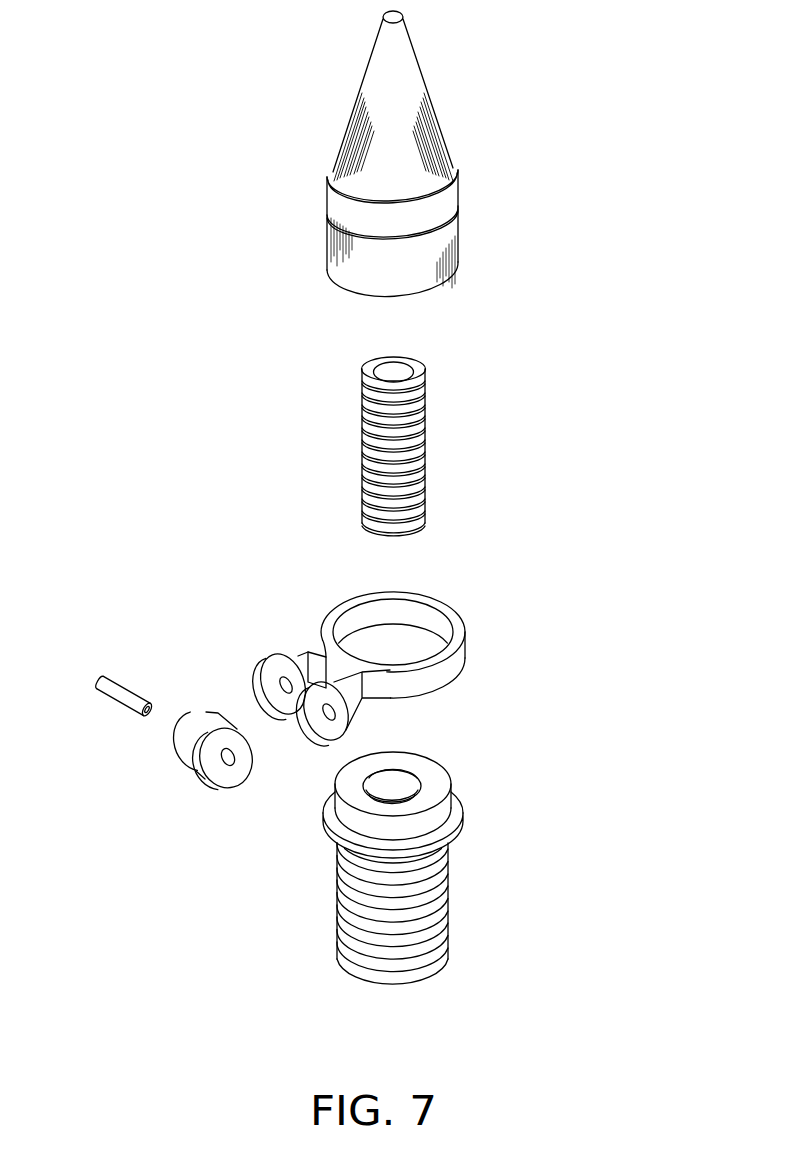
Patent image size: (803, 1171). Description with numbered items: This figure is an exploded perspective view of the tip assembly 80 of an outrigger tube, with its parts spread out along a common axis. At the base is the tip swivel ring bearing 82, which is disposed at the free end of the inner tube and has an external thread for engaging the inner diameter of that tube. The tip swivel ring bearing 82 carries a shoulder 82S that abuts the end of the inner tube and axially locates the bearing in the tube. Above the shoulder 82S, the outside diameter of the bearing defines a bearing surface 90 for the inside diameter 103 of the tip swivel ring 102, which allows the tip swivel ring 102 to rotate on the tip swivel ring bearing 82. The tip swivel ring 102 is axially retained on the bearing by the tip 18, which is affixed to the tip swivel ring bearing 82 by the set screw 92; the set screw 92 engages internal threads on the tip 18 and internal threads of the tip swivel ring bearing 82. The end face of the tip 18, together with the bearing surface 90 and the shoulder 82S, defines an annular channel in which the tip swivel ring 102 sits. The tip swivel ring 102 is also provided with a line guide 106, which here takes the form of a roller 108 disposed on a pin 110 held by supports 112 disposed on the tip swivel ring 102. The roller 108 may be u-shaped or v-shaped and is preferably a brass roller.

The tip 18 is at (427, 77).
The set screw 92 is at (427, 400).
The tip assembly 80 is at (553, 420).
The tip swivel ring 102 is at (434, 629).
The inside diameter 103 is at (442, 623).
The line guide 106 is at (226, 664).
The pin 110 is at (105, 698).
The roller 108 is at (220, 788).
The supports 112 is at (317, 742).
The bearing surface 90 is at (425, 822).
The shoulder 82S is at (462, 813).
The tip swivel ring bearing 82 is at (435, 856).